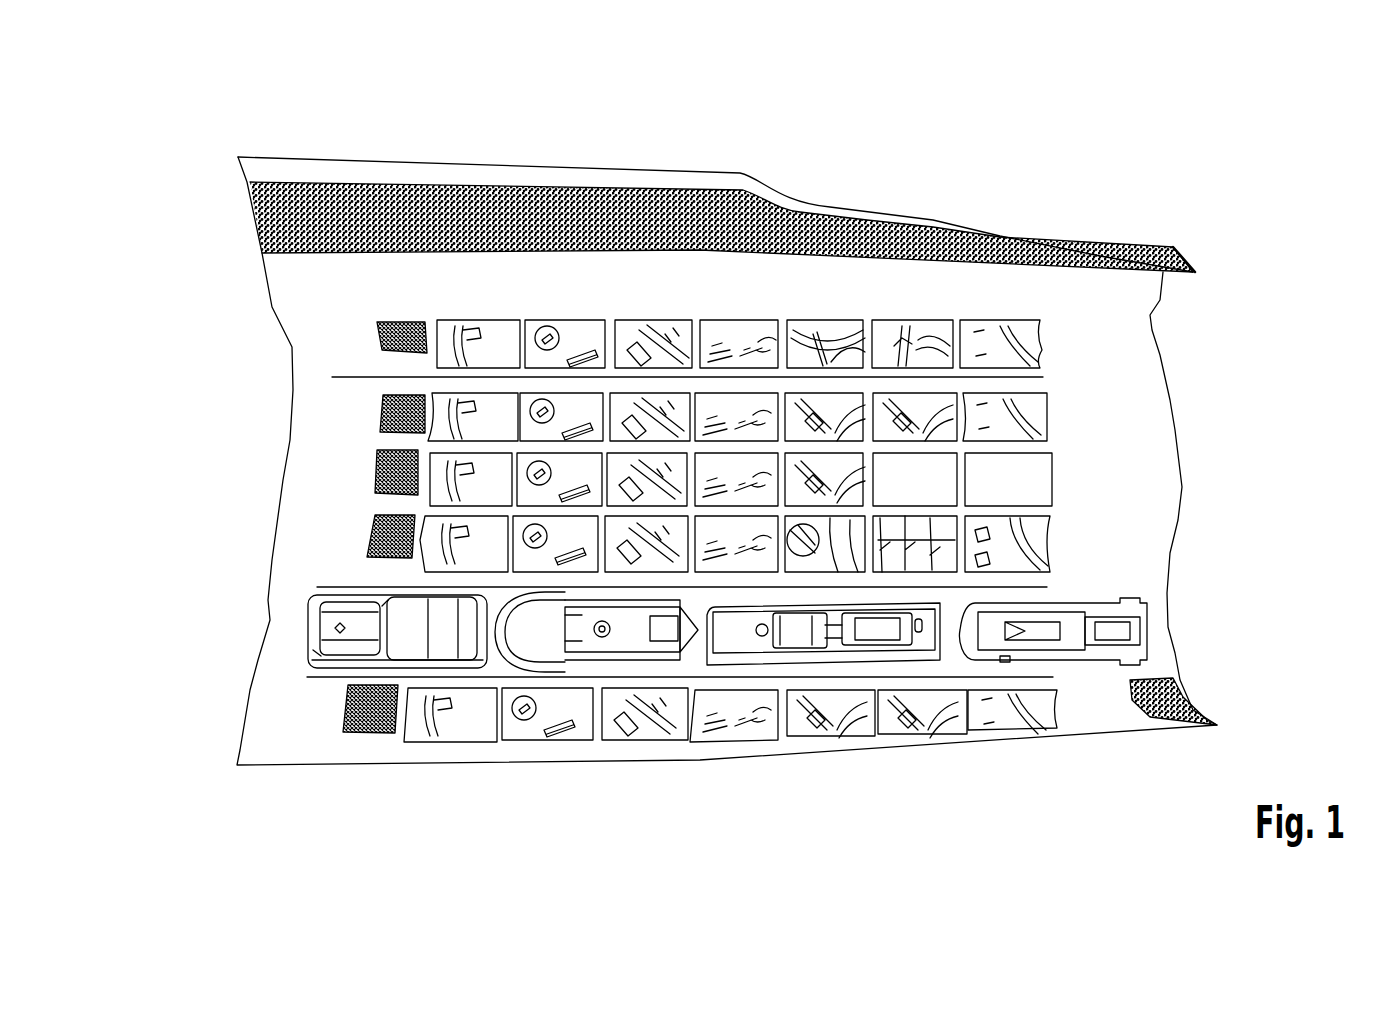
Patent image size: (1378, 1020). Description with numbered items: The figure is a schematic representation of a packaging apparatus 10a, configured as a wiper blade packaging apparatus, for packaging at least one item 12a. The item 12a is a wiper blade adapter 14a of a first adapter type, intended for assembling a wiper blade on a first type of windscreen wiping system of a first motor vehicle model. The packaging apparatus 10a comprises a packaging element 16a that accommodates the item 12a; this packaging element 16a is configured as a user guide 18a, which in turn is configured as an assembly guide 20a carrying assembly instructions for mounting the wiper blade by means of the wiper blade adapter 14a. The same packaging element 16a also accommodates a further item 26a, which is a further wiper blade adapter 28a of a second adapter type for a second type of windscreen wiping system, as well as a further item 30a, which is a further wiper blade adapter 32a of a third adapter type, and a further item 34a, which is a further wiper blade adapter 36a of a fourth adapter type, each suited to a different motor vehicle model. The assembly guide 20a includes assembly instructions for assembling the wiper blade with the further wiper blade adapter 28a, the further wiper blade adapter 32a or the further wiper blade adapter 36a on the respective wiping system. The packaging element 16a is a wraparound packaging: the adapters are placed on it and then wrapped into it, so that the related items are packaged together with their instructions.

The packaging apparatus 10a is at (195, 133).
The packaging element 16a is at (654, 461).
The user guide 18a is at (654, 461).
The assembly guide 20a is at (301, 308).
The item 12a is at (397, 713).
The wiper blade adapter 14a is at (407, 642).
The further item 26a is at (596, 712).
The further wiper blade adapter 28a is at (630, 635).
The further item 30a is at (823, 716).
The further wiper blade adapter 32a is at (805, 632).
The further item 34a is at (1053, 713).
The further wiper blade adapter 36a is at (1067, 630).